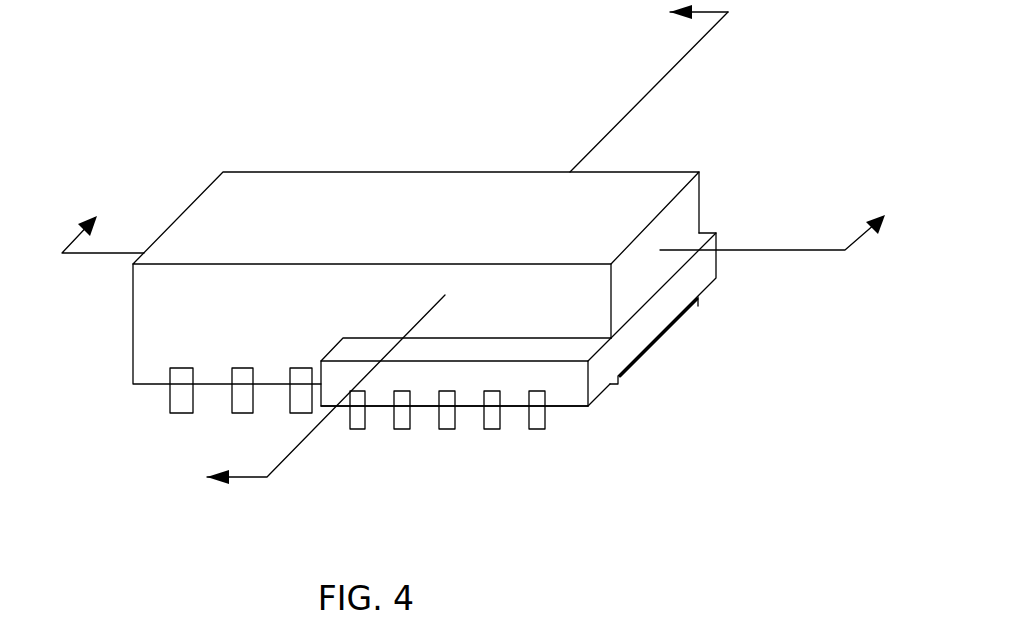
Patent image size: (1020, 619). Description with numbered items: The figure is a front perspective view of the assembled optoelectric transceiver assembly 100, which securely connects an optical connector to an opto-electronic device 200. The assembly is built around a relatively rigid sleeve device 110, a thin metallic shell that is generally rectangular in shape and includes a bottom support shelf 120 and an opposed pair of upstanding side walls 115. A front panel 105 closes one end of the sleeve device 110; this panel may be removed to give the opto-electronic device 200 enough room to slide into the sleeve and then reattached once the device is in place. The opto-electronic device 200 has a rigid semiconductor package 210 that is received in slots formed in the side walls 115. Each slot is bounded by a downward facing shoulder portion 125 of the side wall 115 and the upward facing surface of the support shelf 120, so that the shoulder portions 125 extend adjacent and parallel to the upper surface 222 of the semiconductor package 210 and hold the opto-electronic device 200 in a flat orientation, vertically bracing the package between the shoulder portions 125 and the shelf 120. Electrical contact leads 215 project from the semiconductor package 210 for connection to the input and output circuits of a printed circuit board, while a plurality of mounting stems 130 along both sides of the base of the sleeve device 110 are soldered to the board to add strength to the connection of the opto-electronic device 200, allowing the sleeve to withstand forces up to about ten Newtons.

The optoelectric transceiver assembly 100 is at (408, 83).
The front panel 105 is at (690, 215).
The sleeve device 110 is at (650, 172).
The side walls 115 is at (133, 345).
The bottom support shelf 120 is at (683, 323).
The shoulder portion 125 is at (590, 332).
The mounting stems 130 is at (235, 413).
The opto-electronic device 200 is at (499, 425).
The semiconductor package 210 is at (562, 408).
The electrical contact leads 215 is at (537, 430).
The upper surface 222 is at (467, 350).